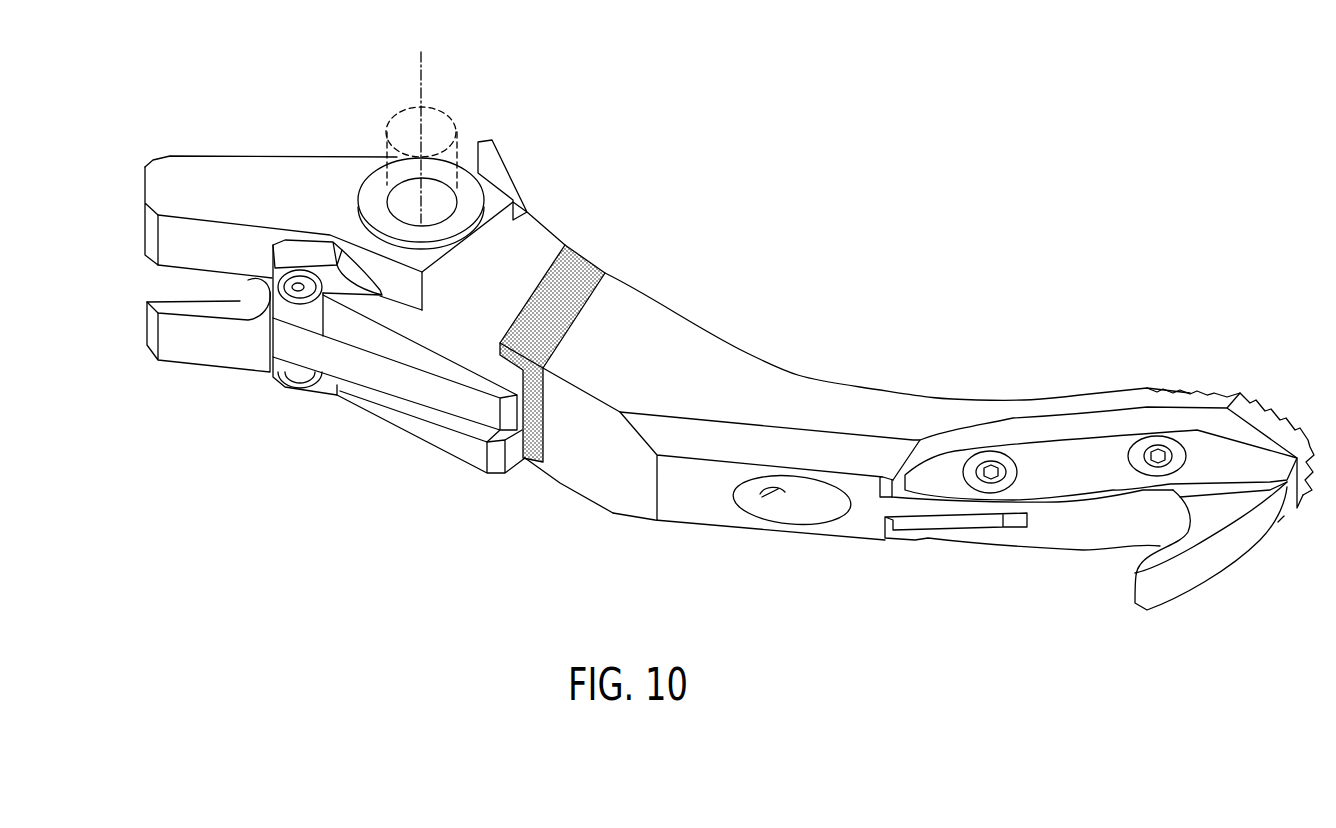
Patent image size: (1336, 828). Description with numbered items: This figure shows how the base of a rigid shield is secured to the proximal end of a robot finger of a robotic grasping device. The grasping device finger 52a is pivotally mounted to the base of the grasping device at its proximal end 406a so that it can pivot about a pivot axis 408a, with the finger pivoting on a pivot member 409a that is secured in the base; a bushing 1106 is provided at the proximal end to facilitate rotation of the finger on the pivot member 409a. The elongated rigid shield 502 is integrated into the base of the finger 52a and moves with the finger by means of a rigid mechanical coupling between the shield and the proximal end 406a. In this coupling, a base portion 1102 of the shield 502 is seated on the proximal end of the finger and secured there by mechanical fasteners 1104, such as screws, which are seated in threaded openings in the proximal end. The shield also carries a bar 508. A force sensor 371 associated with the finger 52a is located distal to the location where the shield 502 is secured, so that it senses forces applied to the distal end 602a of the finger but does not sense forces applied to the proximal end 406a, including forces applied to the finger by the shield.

The grasping device finger 52a is at (613, 498).
The force sensor 371 is at (587, 266).
The proximal end 406a is at (497, 244).
The pivot axis 408a is at (421, 87).
The pivot member 409a is at (387, 150).
The shield 502 is at (462, 398).
The clamp bar 508 is at (412, 383).
The distal end of the finger 602a is at (1203, 387).
The base portion of the shield 1102 is at (252, 345).
The mechanical fasteners 1104 is at (270, 280).
The bushing 1106 is at (370, 212).